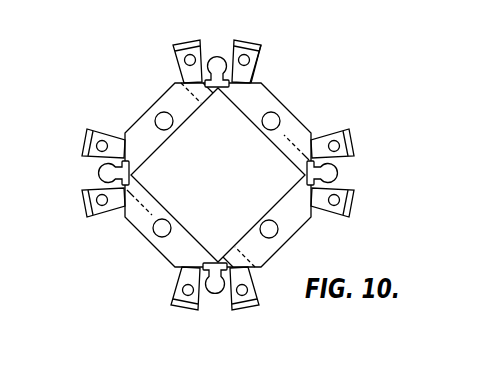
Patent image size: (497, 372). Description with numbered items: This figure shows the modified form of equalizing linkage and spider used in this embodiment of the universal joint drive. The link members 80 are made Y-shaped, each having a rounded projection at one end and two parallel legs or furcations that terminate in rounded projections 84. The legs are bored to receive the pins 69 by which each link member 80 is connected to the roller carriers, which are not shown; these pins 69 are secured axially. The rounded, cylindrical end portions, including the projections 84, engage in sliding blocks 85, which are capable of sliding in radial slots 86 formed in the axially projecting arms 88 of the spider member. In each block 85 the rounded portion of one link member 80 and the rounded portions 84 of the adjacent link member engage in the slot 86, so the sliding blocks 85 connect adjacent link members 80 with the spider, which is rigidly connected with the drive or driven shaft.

The pin 69 is at (163, 112).
The link member 80 is at (254, 101).
The rounded projection 84 is at (218, 57).
The sliding block 85 is at (232, 44).
The radial slot 86 is at (210, 43).
The axially projecting arm 88 is at (255, 57).